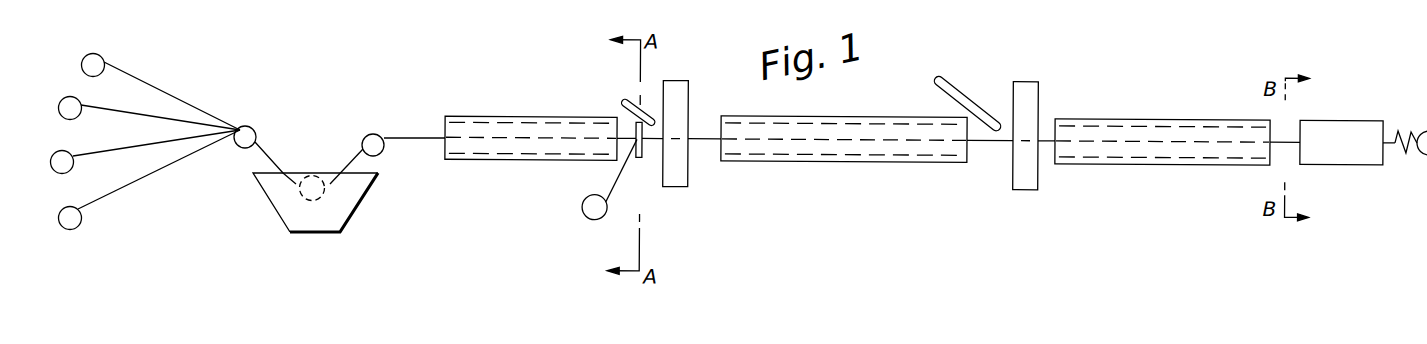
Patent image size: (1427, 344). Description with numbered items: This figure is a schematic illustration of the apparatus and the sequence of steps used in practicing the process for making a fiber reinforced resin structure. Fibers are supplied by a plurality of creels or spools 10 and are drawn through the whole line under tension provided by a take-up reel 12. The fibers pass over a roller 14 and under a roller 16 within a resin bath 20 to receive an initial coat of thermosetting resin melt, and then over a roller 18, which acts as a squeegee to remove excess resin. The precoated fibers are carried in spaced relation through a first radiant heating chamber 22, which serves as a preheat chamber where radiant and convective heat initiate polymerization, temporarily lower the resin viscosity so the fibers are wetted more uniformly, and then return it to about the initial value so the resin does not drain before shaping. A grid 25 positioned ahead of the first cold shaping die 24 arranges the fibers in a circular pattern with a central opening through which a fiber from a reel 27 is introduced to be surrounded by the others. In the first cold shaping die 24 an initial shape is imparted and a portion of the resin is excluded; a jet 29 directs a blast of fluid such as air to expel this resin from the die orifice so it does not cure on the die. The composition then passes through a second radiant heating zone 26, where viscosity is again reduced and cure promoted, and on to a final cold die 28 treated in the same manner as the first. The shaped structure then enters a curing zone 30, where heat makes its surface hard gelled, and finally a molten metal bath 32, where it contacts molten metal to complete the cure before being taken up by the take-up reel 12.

The creels or spools 10 is at (78, 206).
The take-up reel 12 is at (1423, 154).
The roller 14 is at (257, 135).
The roller 16 is at (309, 175).
The roller 18 is at (370, 133).
The resin bath 20 is at (275, 213).
The first radiant heating chamber 22 is at (509, 159).
The first cold shaping die 24 is at (667, 188).
The grid 25 is at (642, 154).
The second radiant heating zone 26 is at (810, 159).
The reel 27 is at (592, 220).
The final cold die 28 is at (1018, 188).
The jet 29 is at (635, 94).
The curing zone 30 is at (1208, 91).
The molten metal bath 32 is at (953, 78).